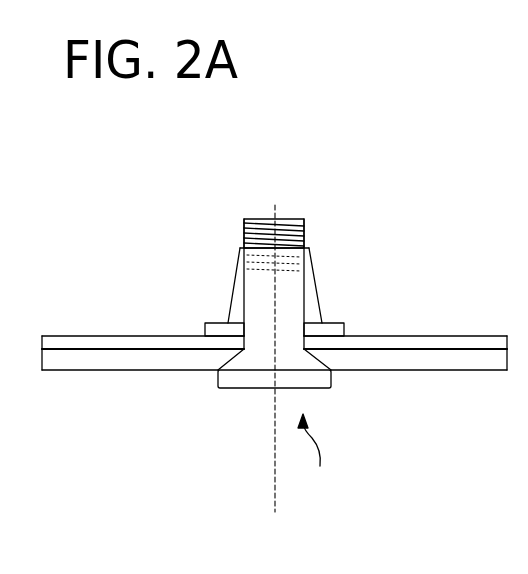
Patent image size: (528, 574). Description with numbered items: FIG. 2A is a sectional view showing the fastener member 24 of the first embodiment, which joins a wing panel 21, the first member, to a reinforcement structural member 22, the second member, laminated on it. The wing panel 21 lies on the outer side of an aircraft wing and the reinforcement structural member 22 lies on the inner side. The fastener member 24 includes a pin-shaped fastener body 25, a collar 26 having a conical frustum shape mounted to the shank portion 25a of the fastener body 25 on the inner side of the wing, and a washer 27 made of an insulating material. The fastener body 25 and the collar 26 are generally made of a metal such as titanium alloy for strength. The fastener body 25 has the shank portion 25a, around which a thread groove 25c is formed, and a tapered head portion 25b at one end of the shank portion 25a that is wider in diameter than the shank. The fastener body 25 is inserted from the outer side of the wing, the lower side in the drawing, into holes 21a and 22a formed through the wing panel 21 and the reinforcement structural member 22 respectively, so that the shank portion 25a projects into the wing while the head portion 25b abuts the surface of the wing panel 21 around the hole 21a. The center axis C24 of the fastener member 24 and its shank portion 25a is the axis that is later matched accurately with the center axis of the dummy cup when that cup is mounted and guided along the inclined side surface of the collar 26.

The wing panel 21 is at (425, 371).
The hole 21a is at (231, 357).
The reinforcement structural member 22 is at (450, 336).
The hole 22a is at (260, 333).
The fastener member 24 is at (318, 455).
The center axis C24 is at (276, 500).
The fastener body 25 is at (331, 389).
The shank portion 25a is at (288, 218).
The head portion 25b is at (222, 389).
The thread groove 25c is at (246, 240).
The collar 26 is at (316, 264).
The washer 27 is at (334, 322).